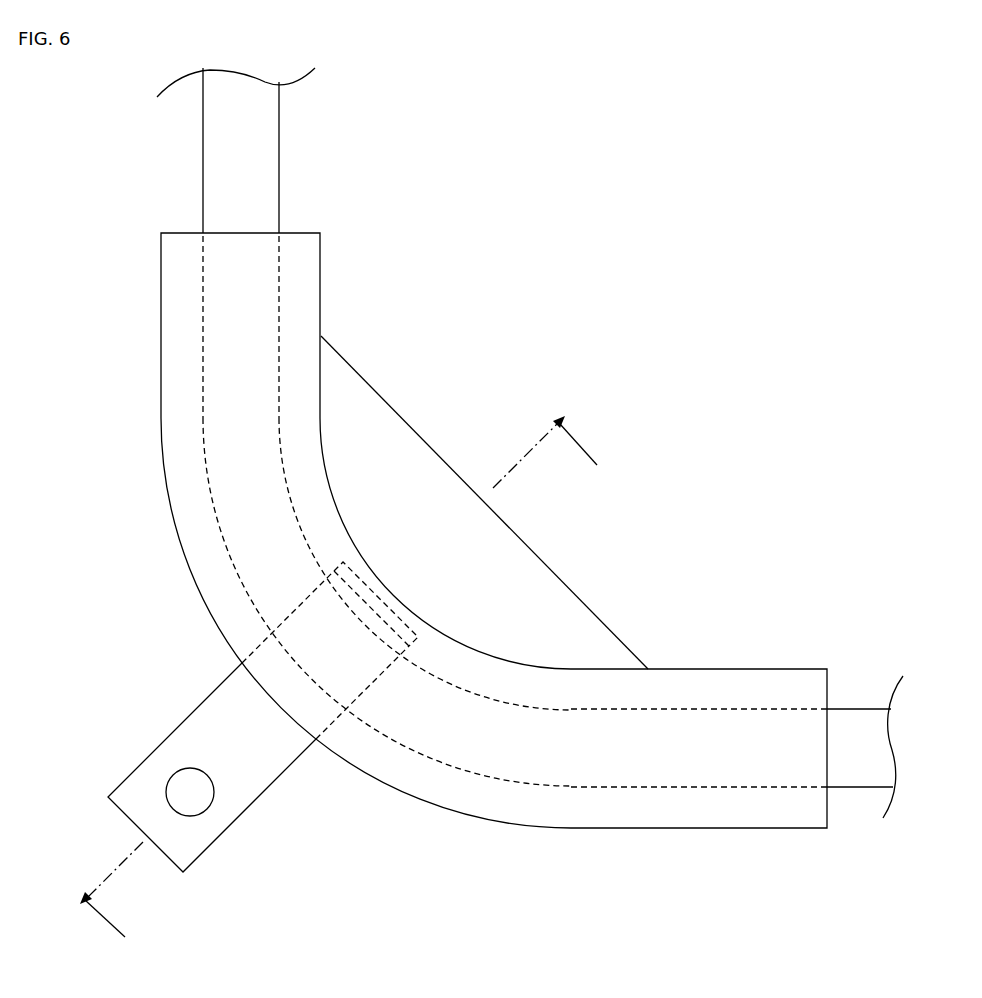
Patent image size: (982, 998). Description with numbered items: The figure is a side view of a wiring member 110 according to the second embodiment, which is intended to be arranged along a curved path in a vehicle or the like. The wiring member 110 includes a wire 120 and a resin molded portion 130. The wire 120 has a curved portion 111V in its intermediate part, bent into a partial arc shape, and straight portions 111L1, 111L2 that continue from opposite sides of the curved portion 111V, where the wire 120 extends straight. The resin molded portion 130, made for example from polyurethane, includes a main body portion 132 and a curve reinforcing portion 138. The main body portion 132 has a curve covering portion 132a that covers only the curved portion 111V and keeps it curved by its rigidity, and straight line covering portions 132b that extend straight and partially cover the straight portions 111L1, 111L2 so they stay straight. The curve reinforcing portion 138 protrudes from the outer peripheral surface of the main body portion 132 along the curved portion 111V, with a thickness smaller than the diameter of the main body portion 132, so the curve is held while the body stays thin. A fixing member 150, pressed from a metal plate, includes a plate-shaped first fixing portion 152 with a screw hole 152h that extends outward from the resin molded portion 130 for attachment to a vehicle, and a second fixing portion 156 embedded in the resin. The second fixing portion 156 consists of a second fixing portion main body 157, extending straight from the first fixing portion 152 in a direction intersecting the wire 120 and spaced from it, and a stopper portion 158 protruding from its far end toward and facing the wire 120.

The wiring member 110 is at (503, 389).
The wire 120 is at (283, 162).
The resin molded portion 130 is at (330, 333).
The main body portion 132 is at (175, 515).
The curve covering portion 132a is at (198, 578).
The straight line covering portion 132b is at (160, 262).
The curve reinforcing portion 138 is at (568, 575).
The straight portion 111L1 is at (283, 277).
The curved portion 111V is at (283, 450).
The straight portion 111L2 is at (781, 709).
The fixing member 150 is at (433, 905).
The first fixing portion 152 is at (267, 790).
The screw hole 152h is at (172, 801).
The second fixing portion 156 is at (462, 862).
The second fixing portion main body 157 is at (373, 682).
The stopper portion 158 is at (420, 645).